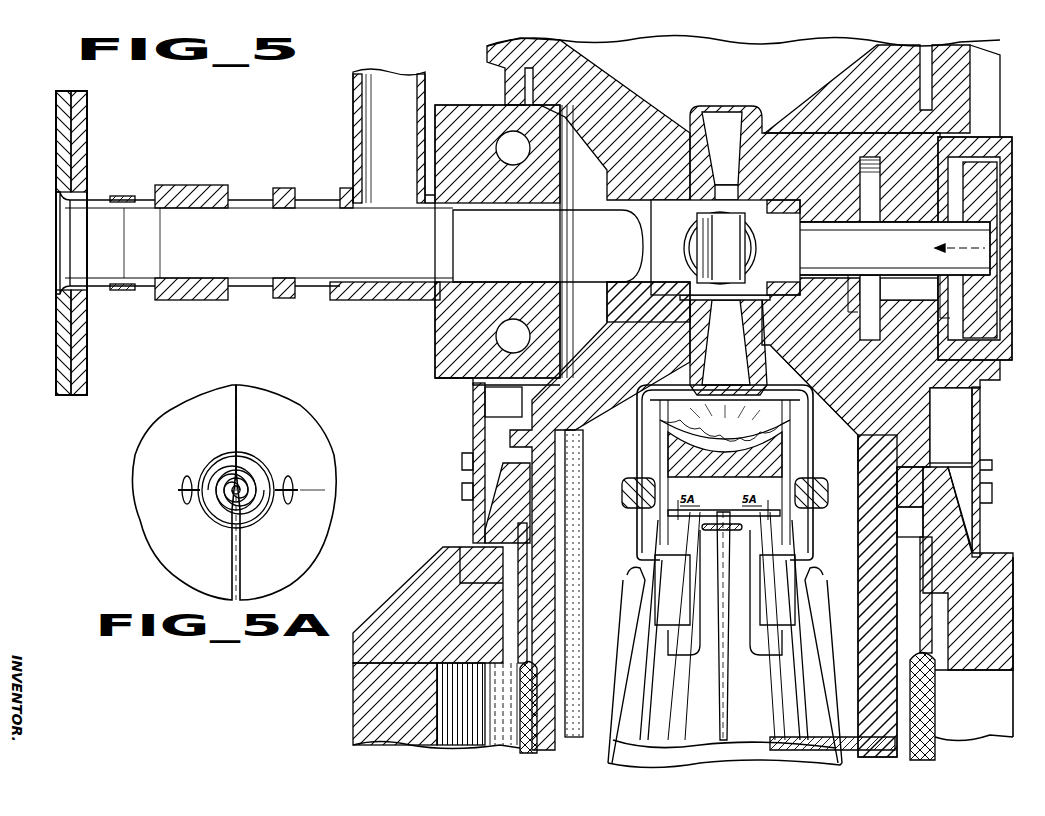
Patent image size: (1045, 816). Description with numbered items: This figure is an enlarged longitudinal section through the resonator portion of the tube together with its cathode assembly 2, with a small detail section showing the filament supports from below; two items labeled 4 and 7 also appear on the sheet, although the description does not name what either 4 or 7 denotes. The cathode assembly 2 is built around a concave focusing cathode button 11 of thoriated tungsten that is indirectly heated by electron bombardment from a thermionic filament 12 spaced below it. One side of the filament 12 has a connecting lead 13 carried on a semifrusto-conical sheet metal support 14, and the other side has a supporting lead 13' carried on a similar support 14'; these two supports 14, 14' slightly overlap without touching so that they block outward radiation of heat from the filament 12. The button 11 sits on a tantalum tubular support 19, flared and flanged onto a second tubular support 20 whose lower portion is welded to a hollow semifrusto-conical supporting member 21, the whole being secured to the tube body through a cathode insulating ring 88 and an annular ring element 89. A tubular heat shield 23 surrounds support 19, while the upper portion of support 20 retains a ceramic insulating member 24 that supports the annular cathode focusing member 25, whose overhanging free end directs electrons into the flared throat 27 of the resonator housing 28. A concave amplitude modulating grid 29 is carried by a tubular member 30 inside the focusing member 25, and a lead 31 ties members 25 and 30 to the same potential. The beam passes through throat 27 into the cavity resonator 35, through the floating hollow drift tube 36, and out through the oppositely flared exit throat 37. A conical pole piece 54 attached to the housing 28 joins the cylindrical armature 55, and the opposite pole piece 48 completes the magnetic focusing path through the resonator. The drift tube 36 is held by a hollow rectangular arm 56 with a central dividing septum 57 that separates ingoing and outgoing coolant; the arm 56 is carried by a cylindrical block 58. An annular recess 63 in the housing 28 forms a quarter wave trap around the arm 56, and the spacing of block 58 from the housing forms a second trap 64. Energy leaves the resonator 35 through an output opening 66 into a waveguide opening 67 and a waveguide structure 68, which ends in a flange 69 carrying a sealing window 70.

In FIG. 5, the cathode assembly 2 is at (845, 668).
In FIG. 5, the housing 4 is at (488, 84).
In FIG. 5, the tube 7 is at (190, 170).
In FIG. 5, the concave focusing cathode button 11 is at (735, 446).
In FIG. 5, the thermionic filament 12 is at (700, 528).
In FIG. 5A, the thermionic filament 12 is at (245, 470).
In FIG. 5, the connecting lead 13 is at (684, 613).
In FIG. 5A, the connecting lead 13 is at (172, 484).
In FIG. 5, the supporting lead 13' is at (761, 613).
In FIG. 5A, the supporting lead 13' is at (296, 478).
In FIG. 5, the semifrusto-conical sheet metal support 14 is at (669, 630).
In FIG. 5A, the semifrusto-conical sheet metal support 14 is at (220, 492).
In FIG. 5, the semifrusto-conical sheet metal support 14' is at (779, 630).
In FIG. 5A, the semifrusto-conical sheet metal support 14' is at (332, 482).
In FIG. 5, the tubular support 19 is at (792, 537).
In FIG. 5, the second tubular support 20 is at (830, 548).
In FIG. 5, the hollow semifrusto-conical supporting member 21 is at (828, 722).
In FIG. 5, the tubular heat shield 23 is at (790, 527).
In FIG. 5, the annular insulating member 24 is at (828, 492).
In FIG. 5, the annular cathode focusing member 25 is at (815, 452).
In FIG. 5, the flared throat 27 is at (768, 374).
In FIG. 5, the resonator housing 28 is at (600, 290).
In FIG. 5, the amplitude modulating grid 29 is at (688, 430).
In FIG. 5, the tubular member 30 is at (805, 430).
In FIG. 5, the lead 31 is at (640, 680).
In FIG. 5, the cavity resonator 35 is at (675, 263).
In FIG. 5, the hollow drift tube 36 is at (700, 230).
In FIG. 5, the exit throat 37 is at (732, 140).
In FIG. 5, the pole piece 48 is at (612, 100).
In FIG. 5, the conical pole piece 54 is at (555, 468).
In FIG. 5, the cylindrical armature 55 is at (400, 588).
In FIG. 5, the hollow rectangular arm 56 is at (905, 160).
In FIG. 5, the central dividing septum 57 is at (885, 258).
In FIG. 5, the cylindrical block 58 is at (975, 175).
In FIG. 5, the annular recess 63 is at (850, 312).
In FIG. 5, the second trap 64 is at (948, 318).
In FIG. 5, the energy output opening 66 is at (690, 242).
In FIG. 5, the waveguide opening 67 is at (470, 272).
In FIG. 5, the waveguide structure 68 is at (122, 290).
In FIG. 5, the end flange 69 is at (83, 361).
In FIG. 5, the sealing window 70 is at (62, 233).
In FIG. 5, the cathode insulating ring 88 is at (930, 715).
In FIG. 5, the annular ring element 89 is at (520, 545).